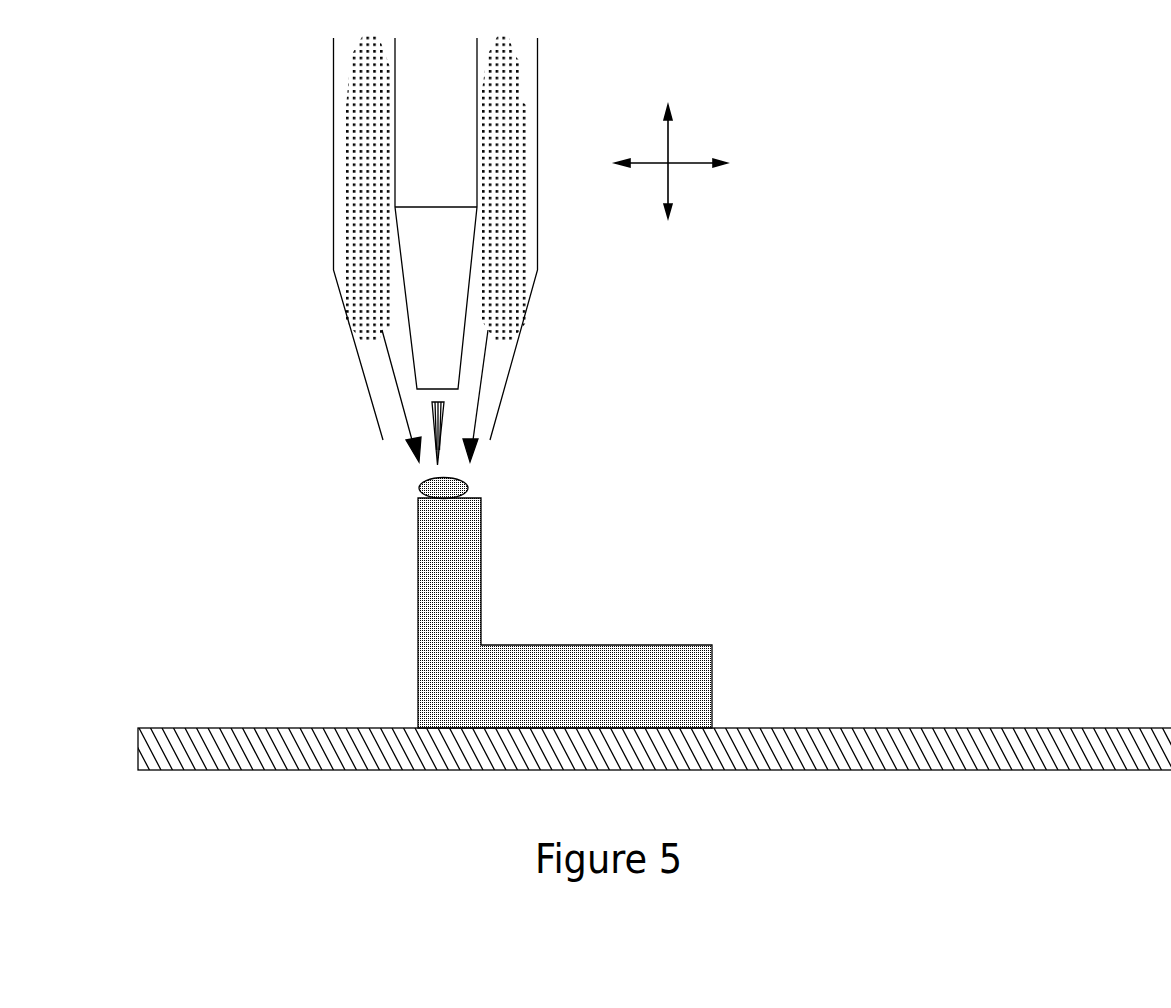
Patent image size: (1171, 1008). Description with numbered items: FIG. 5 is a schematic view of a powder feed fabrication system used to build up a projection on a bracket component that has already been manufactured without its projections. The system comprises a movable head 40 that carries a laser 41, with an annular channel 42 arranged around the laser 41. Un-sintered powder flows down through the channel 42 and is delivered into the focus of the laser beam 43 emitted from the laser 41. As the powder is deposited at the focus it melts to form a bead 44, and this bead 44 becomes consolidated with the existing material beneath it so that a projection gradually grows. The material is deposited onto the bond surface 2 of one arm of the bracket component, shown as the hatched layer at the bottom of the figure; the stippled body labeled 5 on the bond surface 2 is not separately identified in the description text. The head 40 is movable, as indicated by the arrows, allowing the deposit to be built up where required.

The bond surface 2 is at (932, 728).
The deposited structure 5 is at (608, 645).
The movable head 40 is at (278, 245).
The laser 41 is at (458, 302).
The annular channel 42 is at (517, 135).
The laser beam 43 is at (437, 425).
The bead 44 is at (466, 486).